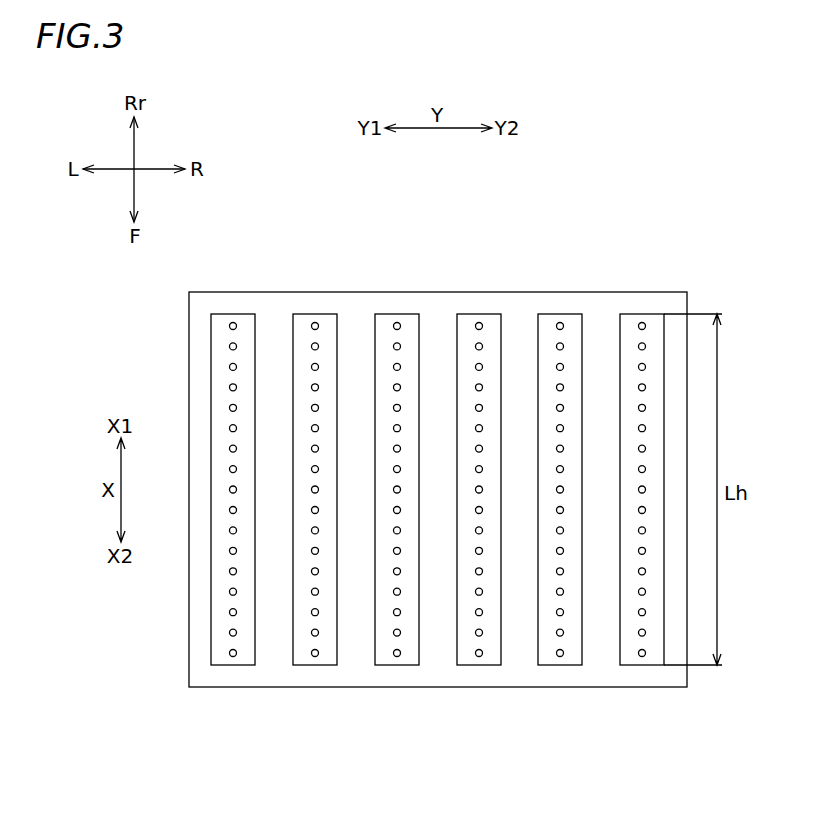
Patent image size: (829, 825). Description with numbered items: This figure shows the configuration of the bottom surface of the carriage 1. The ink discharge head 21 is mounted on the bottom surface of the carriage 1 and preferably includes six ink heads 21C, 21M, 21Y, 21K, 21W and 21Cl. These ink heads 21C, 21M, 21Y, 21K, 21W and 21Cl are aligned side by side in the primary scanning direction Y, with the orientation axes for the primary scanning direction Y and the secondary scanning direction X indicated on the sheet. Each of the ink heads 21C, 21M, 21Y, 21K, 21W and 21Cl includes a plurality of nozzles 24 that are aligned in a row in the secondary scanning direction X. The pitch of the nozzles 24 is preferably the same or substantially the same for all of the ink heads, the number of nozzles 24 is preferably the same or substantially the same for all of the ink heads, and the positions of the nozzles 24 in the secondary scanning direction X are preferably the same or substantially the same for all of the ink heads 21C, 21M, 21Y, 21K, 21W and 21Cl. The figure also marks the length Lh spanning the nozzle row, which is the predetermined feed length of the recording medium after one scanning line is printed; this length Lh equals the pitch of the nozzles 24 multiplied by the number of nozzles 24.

The carriage 1 is at (687, 300).
The ink discharge head 21 is at (228, 235).
The ink head 21C is at (233, 314).
The ink head 21M is at (315, 314).
The ink head 21Y is at (397, 314).
The ink head 21K is at (479, 314).
The ink head 21W is at (560, 314).
The ink head 21Cl is at (642, 314).
The nozzles 24 is at (233, 657).